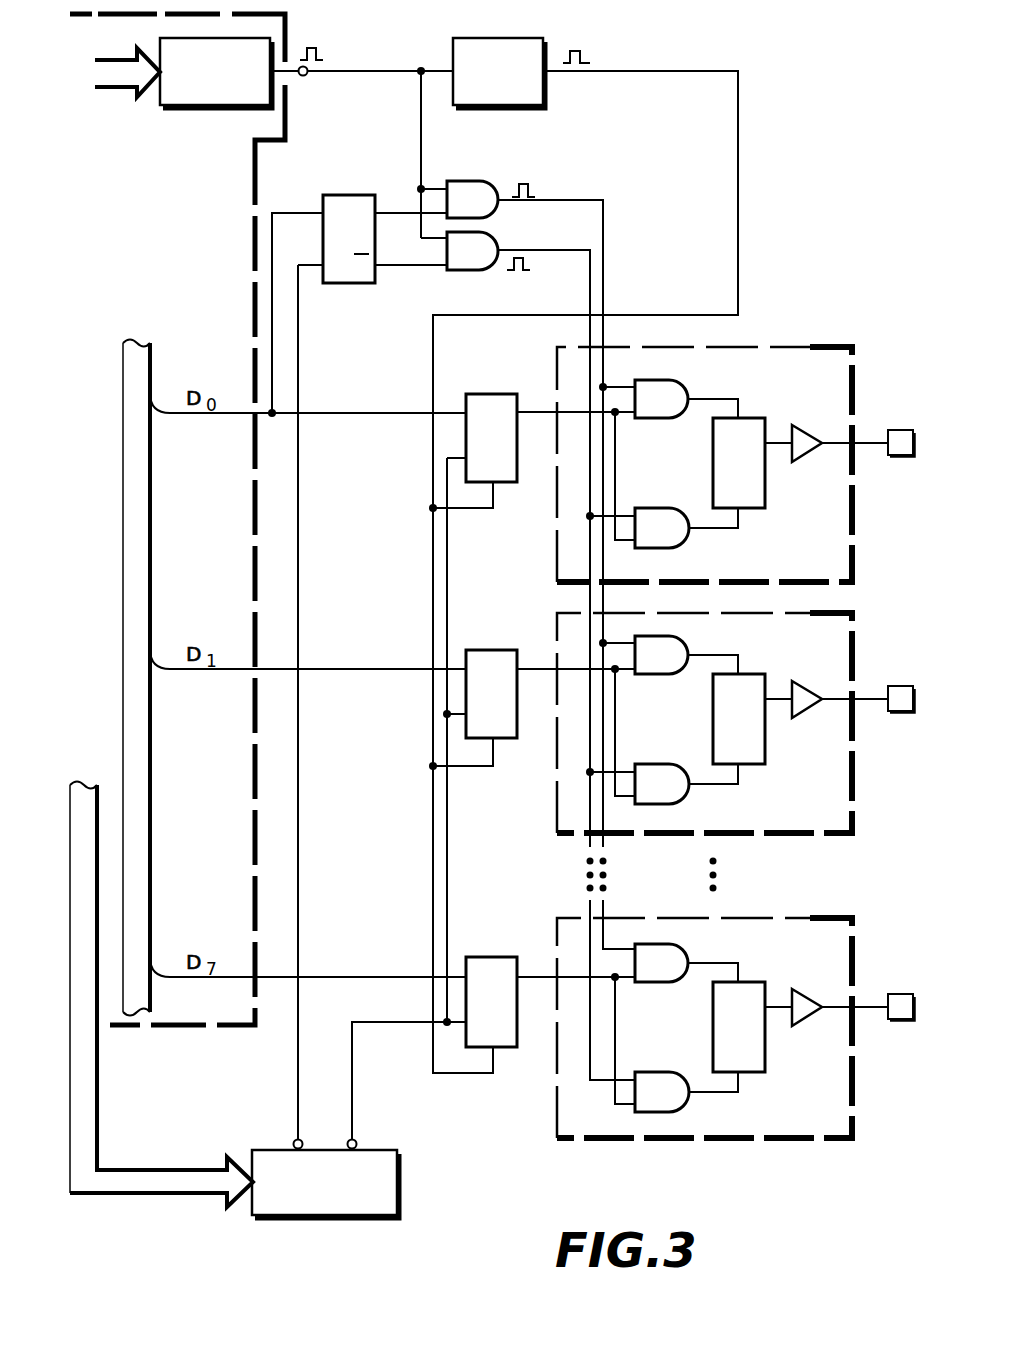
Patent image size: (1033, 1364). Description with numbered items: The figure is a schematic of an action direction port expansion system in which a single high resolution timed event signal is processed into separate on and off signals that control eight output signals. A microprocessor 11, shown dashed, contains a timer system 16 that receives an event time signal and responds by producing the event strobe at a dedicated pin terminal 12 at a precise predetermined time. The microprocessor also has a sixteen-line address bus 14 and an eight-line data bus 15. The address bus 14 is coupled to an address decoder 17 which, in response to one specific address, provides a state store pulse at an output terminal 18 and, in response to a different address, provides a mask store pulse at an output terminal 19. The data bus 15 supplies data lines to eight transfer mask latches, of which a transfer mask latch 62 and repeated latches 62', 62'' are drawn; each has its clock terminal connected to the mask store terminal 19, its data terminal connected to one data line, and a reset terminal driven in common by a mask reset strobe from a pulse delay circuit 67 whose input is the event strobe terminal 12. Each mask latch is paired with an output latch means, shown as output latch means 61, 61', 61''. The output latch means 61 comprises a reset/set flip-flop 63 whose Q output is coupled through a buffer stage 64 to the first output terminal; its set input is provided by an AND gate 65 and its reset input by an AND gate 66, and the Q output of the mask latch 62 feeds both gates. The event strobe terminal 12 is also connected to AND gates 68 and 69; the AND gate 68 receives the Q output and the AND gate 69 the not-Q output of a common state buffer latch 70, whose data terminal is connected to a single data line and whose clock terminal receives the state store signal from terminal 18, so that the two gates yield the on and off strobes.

The microprocessor 11 is at (255, 290).
The terminal 12 is at (306, 76).
The address bus 14 is at (99, 1078).
The data bus 15 is at (152, 800).
The timer system 16 is at (192, 108).
The address decoder 17 is at (399, 1182).
The output terminal 18 is at (294, 1143).
The output terminal 19 is at (357, 1142).
The output latch means 61 is at (704, 446).
The output latch means 61' is at (735, 749).
The output latch means 61'' is at (735, 1043).
The transfer mask latch 62 is at (532, 432).
The transfer mask latch 62' is at (532, 702).
The transfer mask latch 62'' is at (539, 1009).
The reset/set flip-flop 63 is at (713, 462).
The buffer stage 64 is at (808, 425).
The AND gate 65 is at (672, 381).
The AND gate 66 is at (672, 548).
The pulse delay circuit 67 is at (512, 108).
The AND gate 68 is at (466, 181).
The AND gate 69 is at (466, 270).
The common state buffer latch 70 is at (350, 285).